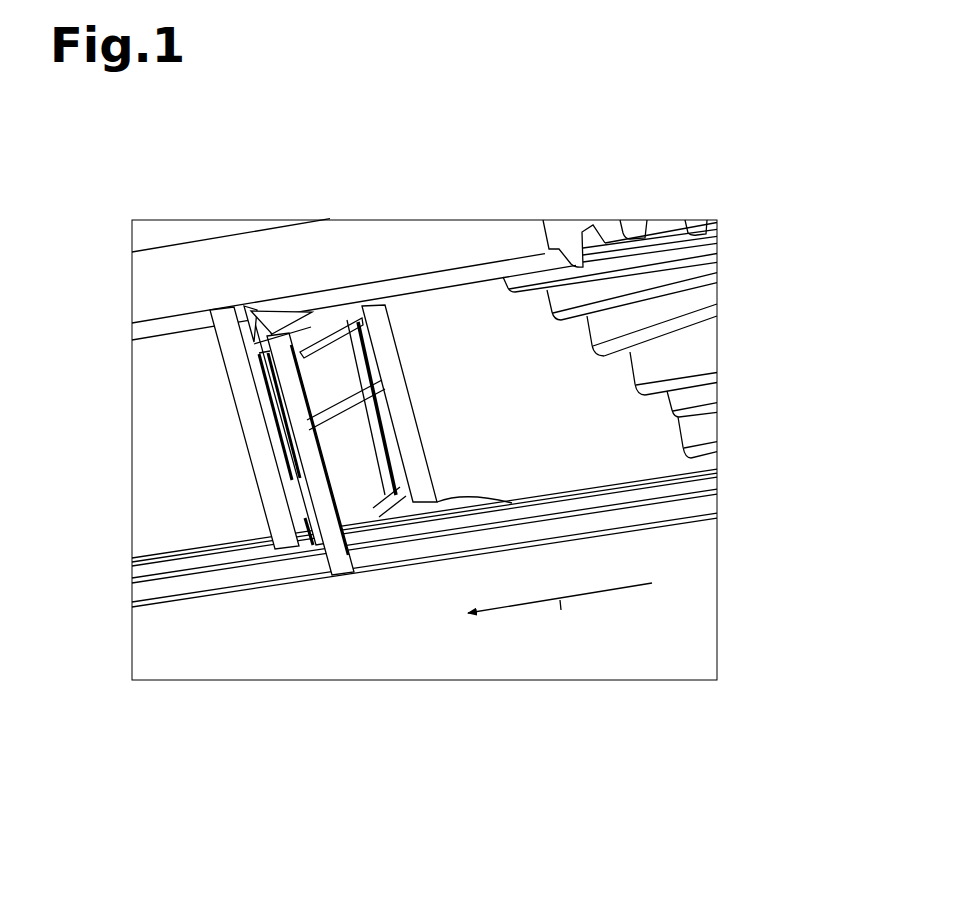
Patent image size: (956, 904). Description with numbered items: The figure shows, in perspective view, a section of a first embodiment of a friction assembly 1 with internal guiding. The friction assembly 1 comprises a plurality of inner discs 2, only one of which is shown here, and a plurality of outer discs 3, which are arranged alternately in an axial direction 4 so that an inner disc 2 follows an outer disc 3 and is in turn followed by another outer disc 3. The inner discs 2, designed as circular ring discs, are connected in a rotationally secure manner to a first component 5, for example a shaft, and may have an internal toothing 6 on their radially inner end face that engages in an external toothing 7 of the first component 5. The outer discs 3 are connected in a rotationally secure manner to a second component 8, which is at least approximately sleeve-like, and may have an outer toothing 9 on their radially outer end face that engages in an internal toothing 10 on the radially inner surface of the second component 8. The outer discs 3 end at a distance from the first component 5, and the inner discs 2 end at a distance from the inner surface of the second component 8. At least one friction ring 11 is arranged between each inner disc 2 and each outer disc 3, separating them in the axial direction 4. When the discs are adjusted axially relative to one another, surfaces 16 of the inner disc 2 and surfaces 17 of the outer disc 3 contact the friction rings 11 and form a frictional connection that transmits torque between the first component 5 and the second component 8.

The friction assembly 1 is at (740, 238).
The inner disc 2 is at (320, 563).
The outer disc 3 is at (588, 453).
The axial direction 4 is at (560, 603).
The first component 5 is at (727, 540).
The internal toothing 6 is at (342, 582).
The external toothing 7 is at (147, 571).
The second component 8 is at (158, 270).
The outer toothing 9 is at (231, 300).
The internal toothing 10 is at (702, 310).
The friction ring 11 is at (372, 487).
The surfaces of the inner disc 16 is at (296, 320).
The surfaces of the outer disc 17 is at (256, 336).